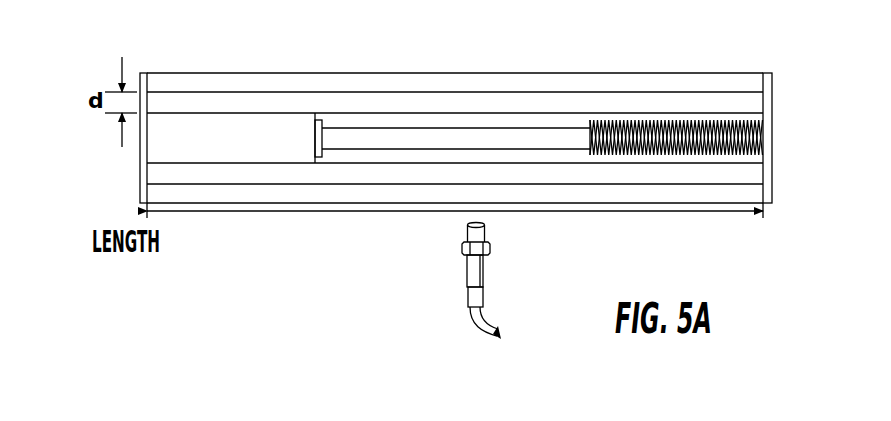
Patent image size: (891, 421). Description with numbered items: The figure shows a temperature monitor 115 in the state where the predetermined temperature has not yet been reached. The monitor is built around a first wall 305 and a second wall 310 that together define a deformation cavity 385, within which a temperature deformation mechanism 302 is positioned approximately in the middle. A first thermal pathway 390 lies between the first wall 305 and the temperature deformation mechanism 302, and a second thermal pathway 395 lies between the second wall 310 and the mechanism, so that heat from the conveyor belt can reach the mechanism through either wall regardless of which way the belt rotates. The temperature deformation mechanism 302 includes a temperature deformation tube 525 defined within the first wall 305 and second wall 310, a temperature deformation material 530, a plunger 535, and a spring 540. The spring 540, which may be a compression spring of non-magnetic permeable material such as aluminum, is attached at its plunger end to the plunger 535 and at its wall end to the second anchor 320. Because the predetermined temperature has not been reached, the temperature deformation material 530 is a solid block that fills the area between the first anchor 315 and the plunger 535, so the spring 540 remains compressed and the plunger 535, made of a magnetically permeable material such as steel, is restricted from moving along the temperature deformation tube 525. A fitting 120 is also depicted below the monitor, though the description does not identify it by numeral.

The temperature monitor 115 is at (567, 45).
The fitting / valve 120 is at (485, 263).
The temperature deformation mechanism 302 is at (487, 112).
The first wall 305 is at (593, 83).
The second wall 310 is at (235, 203).
The first anchor 315 is at (143, 147).
The second anchor 320 is at (772, 103).
The deformation cavity 385 is at (725, 100).
The first thermal pathway 390 is at (273, 103).
The second thermal pathway 395 is at (317, 172).
The temperature deformation tube 525 is at (552, 162).
The temperature deformation material 530 is at (254, 148).
The plunger 535 is at (428, 148).
The spring 540 is at (632, 122).